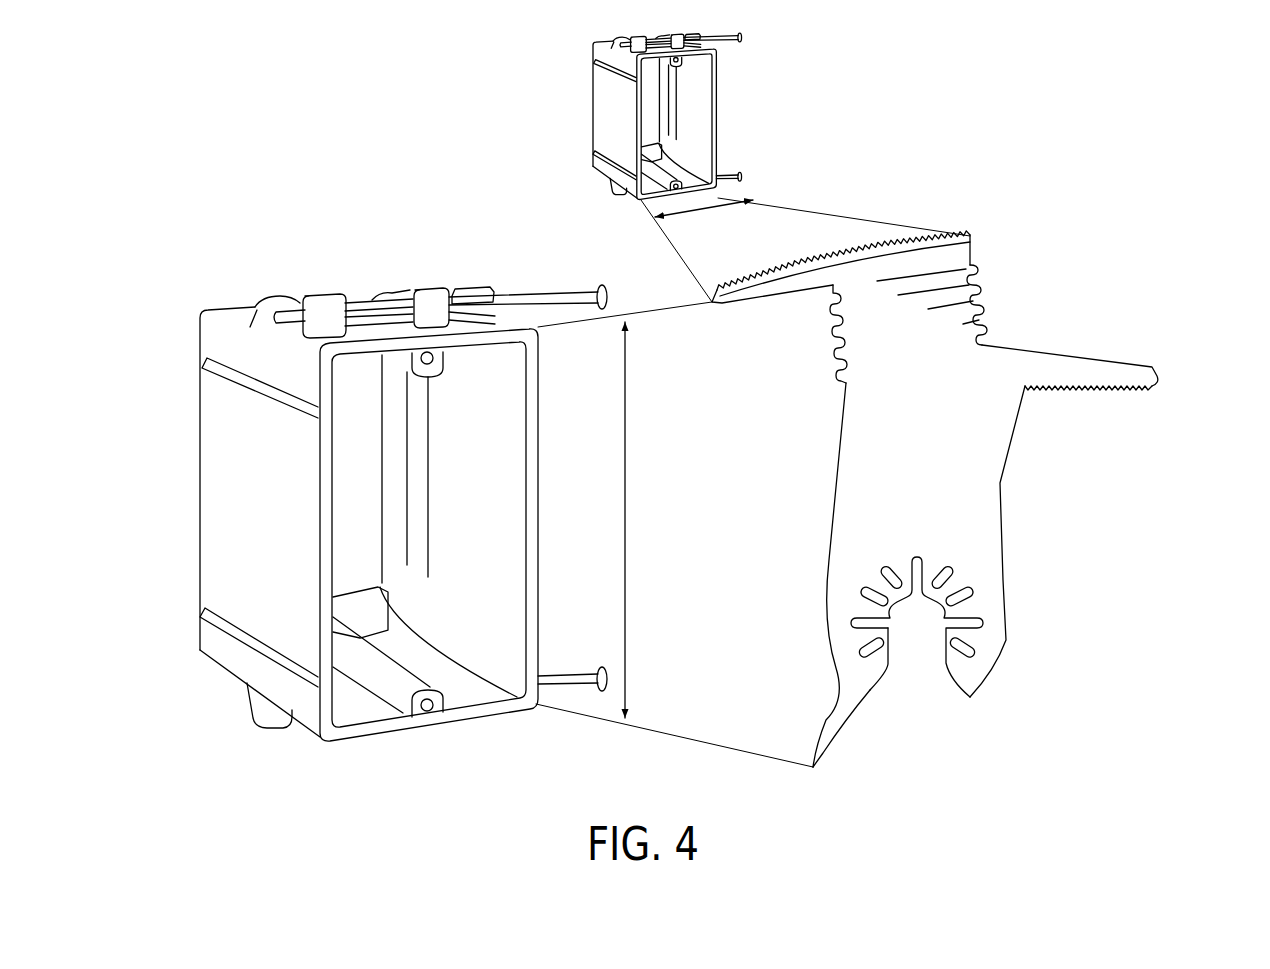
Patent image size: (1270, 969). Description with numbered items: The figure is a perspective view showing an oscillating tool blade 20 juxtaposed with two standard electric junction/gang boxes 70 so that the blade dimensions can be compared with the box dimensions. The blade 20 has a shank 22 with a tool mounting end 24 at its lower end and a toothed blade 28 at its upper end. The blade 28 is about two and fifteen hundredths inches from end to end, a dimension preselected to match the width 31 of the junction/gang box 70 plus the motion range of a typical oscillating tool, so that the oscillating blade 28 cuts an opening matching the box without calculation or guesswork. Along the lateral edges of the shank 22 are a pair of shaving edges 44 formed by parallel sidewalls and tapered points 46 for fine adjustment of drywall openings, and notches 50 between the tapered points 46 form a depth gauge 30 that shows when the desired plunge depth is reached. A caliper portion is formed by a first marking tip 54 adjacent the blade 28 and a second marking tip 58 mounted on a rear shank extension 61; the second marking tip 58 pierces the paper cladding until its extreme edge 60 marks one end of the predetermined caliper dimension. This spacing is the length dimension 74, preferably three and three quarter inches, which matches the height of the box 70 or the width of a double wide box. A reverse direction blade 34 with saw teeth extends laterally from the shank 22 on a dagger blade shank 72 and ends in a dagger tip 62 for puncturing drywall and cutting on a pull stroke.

The oscillating tool blade 20 is at (953, 456).
The shank 22 is at (888, 481).
The tool mounting end 24 is at (1107, 509).
The blade 28 is at (876, 242).
The depth gauge 30 is at (948, 266).
The width 31 is at (700, 210).
The reverse direction blade 34 is at (1091, 402).
The shaving edges 44 is at (836, 357).
The tapered points 46 is at (987, 343).
The notches 50 is at (840, 298).
The first marking tip 54 is at (712, 303).
The second marking tip 58 is at (812, 766).
The extreme edge 60 is at (817, 768).
The rear shank extension 61 is at (862, 698).
The dagger tip 62 is at (1159, 382).
The electric junction/gang box 70 is at (210, 567).
The dagger blade shank 72 is at (1074, 368).
The length dimension 74 is at (625, 540).